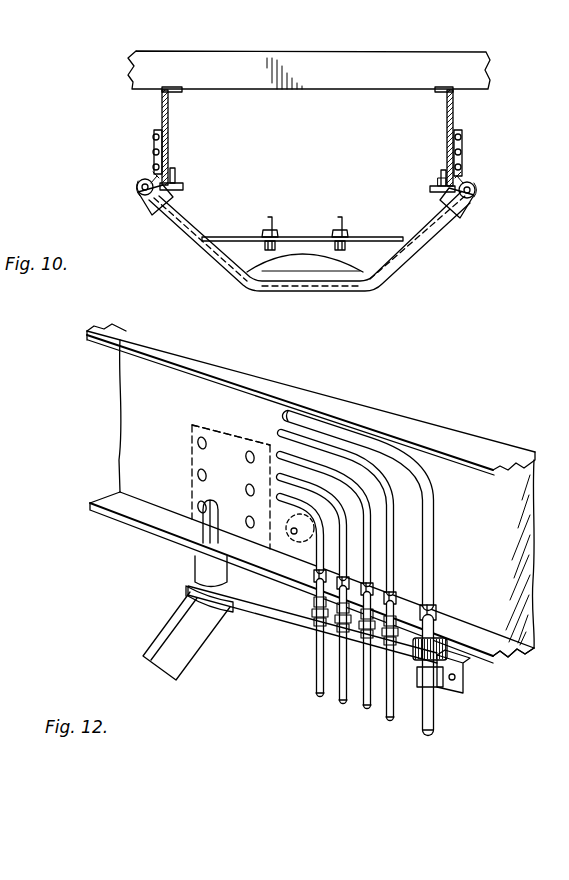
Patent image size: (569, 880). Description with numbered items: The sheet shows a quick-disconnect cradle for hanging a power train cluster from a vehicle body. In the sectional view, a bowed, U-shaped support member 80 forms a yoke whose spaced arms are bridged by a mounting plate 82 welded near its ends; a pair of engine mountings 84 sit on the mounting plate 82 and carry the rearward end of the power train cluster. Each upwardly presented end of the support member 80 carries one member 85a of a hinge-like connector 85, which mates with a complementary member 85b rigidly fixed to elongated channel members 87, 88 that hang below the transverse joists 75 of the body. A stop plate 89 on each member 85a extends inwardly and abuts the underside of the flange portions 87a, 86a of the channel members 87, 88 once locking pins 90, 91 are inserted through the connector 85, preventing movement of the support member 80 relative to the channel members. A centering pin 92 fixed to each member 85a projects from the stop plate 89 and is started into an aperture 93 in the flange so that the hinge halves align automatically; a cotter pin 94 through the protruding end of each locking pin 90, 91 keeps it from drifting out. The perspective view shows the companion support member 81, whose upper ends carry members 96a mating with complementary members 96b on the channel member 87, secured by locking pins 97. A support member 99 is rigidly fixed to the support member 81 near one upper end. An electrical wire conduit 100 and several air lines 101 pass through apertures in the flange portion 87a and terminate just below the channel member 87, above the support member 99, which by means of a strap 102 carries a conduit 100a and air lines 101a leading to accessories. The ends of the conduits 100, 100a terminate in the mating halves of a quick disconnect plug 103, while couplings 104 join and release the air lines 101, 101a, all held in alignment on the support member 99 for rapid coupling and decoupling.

In FIG. 10, the structural beam 75 is at (326, 60).
In FIG. 10, the elongated channel member 88 is at (172, 96).
In FIG. 10, the elongated channel member 87 is at (446, 106).
In FIG. 12, the elongated channel member 87 is at (127, 361).
In FIG. 10, the flange portion 87a is at (432, 188).
In FIG. 12, the flange portion 87a is at (519, 657).
In FIG. 10, the hinge-like connector 85 is at (108, 180).
In FIG. 10, the hinge-like connector member 85a is at (151, 204).
In FIG. 10, the complementary hinge-like connector member 85b is at (153, 138).
In FIG. 10, the cotter pin 94 is at (152, 175).
In FIG. 12, the cotter pin 94 is at (313, 525).
In FIG. 10, the locking pin 91 is at (138, 190).
In FIG. 10, the locking pin 90 is at (480, 196).
In FIG. 10, the locating or centering pin 92 is at (170, 174).
In FIG. 12, the locating or centering pin 92 is at (218, 493).
In FIG. 10, the foot plate 86a is at (184, 184).
In FIG. 10, the stop plate 89 is at (184, 192).
In FIG. 10, the support member 80 is at (424, 230).
In FIG. 10, the mounting plate 82 is at (385, 275).
In FIG. 10, the engine mountings 84 is at (338, 234).
In FIG. 12, the complementary hinge-like connector member 96b is at (243, 437).
In FIG. 12, the hinge-like connector member 96a is at (200, 580).
In FIG. 12, the locking pin 97 is at (335, 527).
In FIG. 12, the air lines 101 is at (470, 539).
In FIG. 12, the air lines 101a is at (344, 702).
In FIG. 12, the electrical wire conduit 100 is at (440, 584).
In FIG. 12, the conduit 100a is at (435, 713).
In FIG. 12, the support member 99 is at (255, 608).
In FIG. 12, the couplings 104 is at (358, 648).
In FIG. 12, the strap 102 is at (410, 662).
In FIG. 12, the quick disconnect plug 103 is at (460, 673).
In FIG. 12, the aperture 93 is at (203, 541).
In FIG. 12, the support member 81 is at (175, 637).